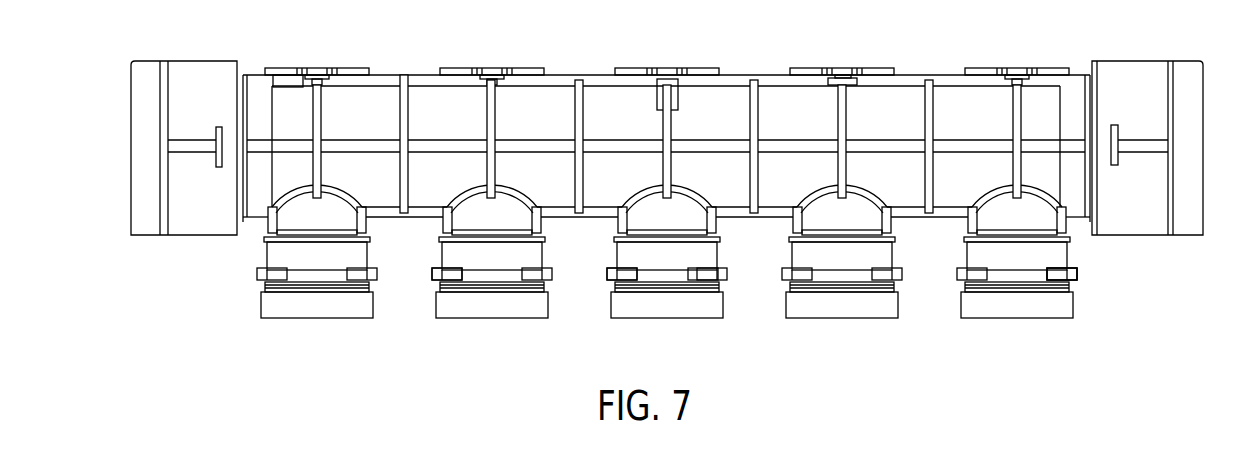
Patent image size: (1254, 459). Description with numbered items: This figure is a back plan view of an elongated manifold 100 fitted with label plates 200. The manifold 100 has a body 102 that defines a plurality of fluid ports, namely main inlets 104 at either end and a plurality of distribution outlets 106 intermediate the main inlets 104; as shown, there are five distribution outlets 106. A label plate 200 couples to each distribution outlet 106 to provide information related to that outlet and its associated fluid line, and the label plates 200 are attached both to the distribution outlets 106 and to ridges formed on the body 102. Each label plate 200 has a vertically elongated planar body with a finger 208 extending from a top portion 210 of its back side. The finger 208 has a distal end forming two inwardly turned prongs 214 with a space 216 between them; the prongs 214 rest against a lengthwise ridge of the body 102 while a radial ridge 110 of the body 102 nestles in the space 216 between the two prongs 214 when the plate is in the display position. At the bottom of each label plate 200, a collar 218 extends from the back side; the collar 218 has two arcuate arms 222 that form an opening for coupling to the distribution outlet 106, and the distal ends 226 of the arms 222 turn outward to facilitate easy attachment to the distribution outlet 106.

The manifold 100 is at (1122, 78).
The body 102 is at (290, 112).
The main inlets 104 is at (138, 83).
The distribution outlets 106 is at (288, 310).
The radial ridge 110 is at (676, 128).
The label plate 200 is at (631, 60).
The finger 208 is at (496, 72).
The top portion 210 is at (367, 71).
The prongs 214 is at (483, 77).
The space 216 is at (841, 72).
The collar 218 is at (718, 282).
The arcuate arms 222 is at (435, 280).
The distal ends 226 is at (624, 273).